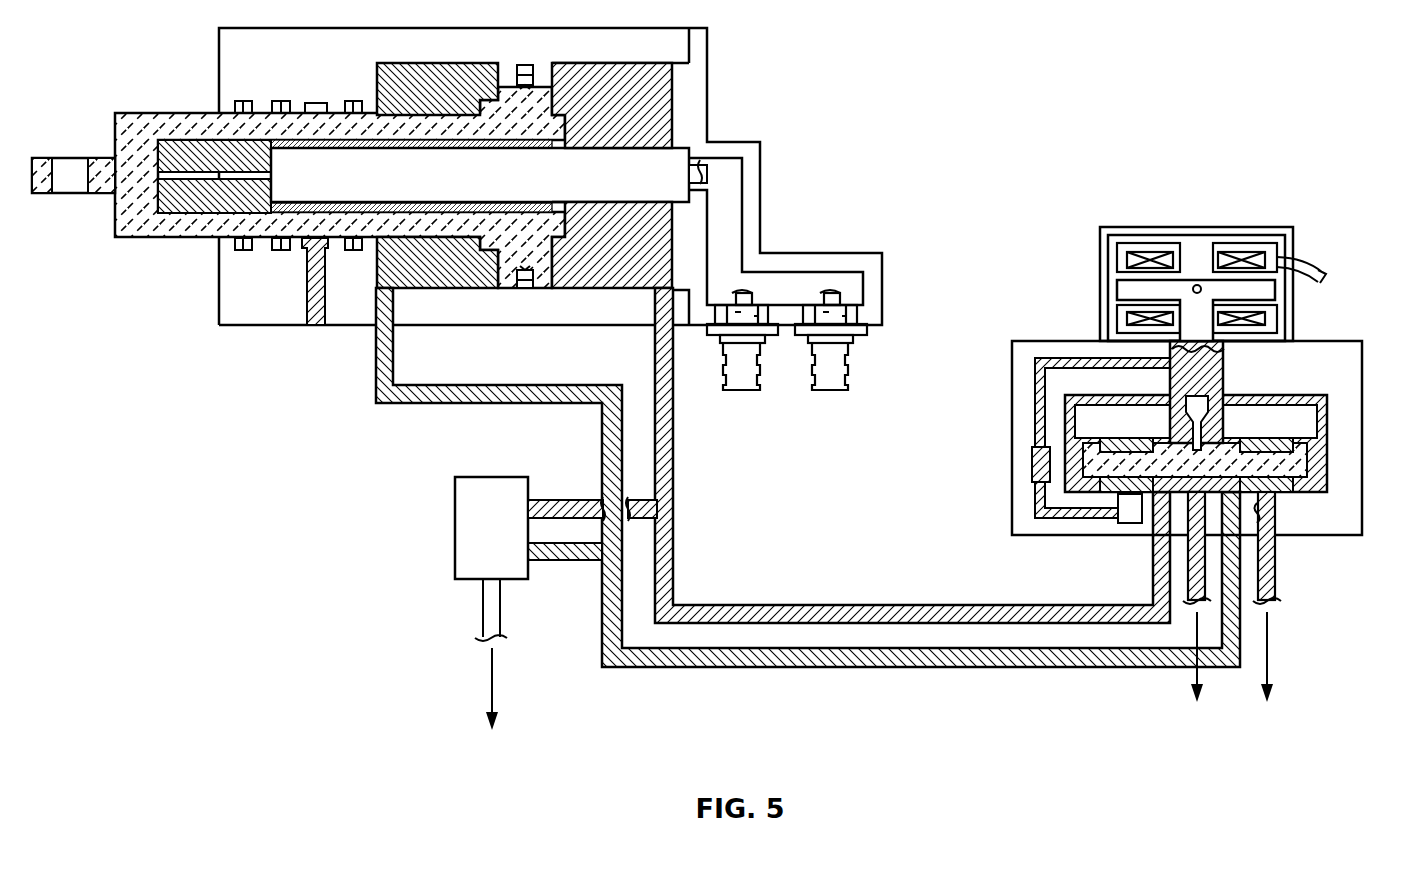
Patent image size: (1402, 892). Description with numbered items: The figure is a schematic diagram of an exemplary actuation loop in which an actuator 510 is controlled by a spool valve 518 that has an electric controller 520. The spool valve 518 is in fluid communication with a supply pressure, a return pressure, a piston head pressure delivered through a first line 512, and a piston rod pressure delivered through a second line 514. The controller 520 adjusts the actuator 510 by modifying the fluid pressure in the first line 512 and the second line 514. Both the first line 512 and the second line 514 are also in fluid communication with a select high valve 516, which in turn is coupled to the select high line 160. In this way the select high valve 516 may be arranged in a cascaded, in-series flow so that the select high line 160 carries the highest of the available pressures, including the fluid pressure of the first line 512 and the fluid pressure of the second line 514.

The actuator 510 is at (246, 336).
The first line 512 is at (833, 604).
The second line 514 is at (827, 668).
The select high valve 516 is at (470, 543).
The spool valve 518 is at (1350, 341).
The electric controller 520 is at (1195, 227).
The select high line 160 is at (493, 671).